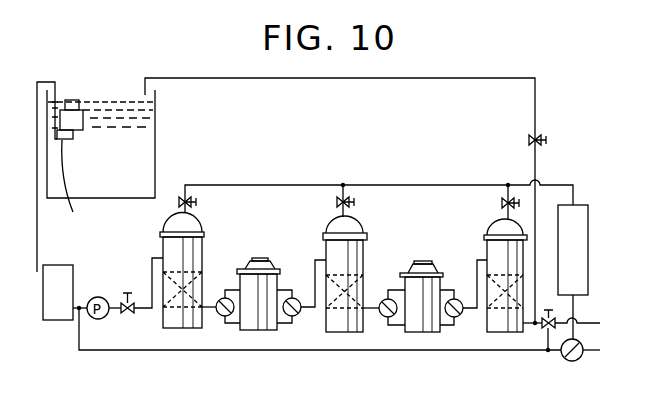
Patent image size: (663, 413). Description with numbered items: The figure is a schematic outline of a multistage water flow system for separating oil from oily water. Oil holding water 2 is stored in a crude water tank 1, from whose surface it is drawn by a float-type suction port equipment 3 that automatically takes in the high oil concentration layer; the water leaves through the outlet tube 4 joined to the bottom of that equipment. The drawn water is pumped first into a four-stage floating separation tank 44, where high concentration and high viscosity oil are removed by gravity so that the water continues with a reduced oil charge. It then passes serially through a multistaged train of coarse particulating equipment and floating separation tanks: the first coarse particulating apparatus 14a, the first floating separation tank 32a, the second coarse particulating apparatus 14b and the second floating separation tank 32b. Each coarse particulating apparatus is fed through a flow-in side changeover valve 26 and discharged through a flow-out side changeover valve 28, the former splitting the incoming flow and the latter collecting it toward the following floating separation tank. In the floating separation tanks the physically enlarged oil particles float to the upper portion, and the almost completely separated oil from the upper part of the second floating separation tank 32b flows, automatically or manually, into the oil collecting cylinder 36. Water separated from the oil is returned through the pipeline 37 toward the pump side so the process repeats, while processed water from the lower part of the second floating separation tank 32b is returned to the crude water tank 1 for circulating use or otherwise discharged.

The crude water tank 1 is at (155, 135).
The oil holding water 2 is at (129, 180).
The suction port equipment 3 is at (72, 101).
The outlet tube 4 is at (73, 185).
The first coarse particulating apparatus 14a is at (246, 268).
The second coarse particulating apparatus 14b is at (410, 270).
The flow-in side changeover valve 26 is at (221, 318).
The flow-out side changeover valve 28 is at (296, 318).
The first floating separation tank 32a is at (331, 223).
The second floating separation tank 32b is at (492, 223).
The oil collecting cylinder 36 is at (584, 204).
The pipeline 37 is at (418, 352).
The four-stage floating separation tank 44 is at (163, 224).